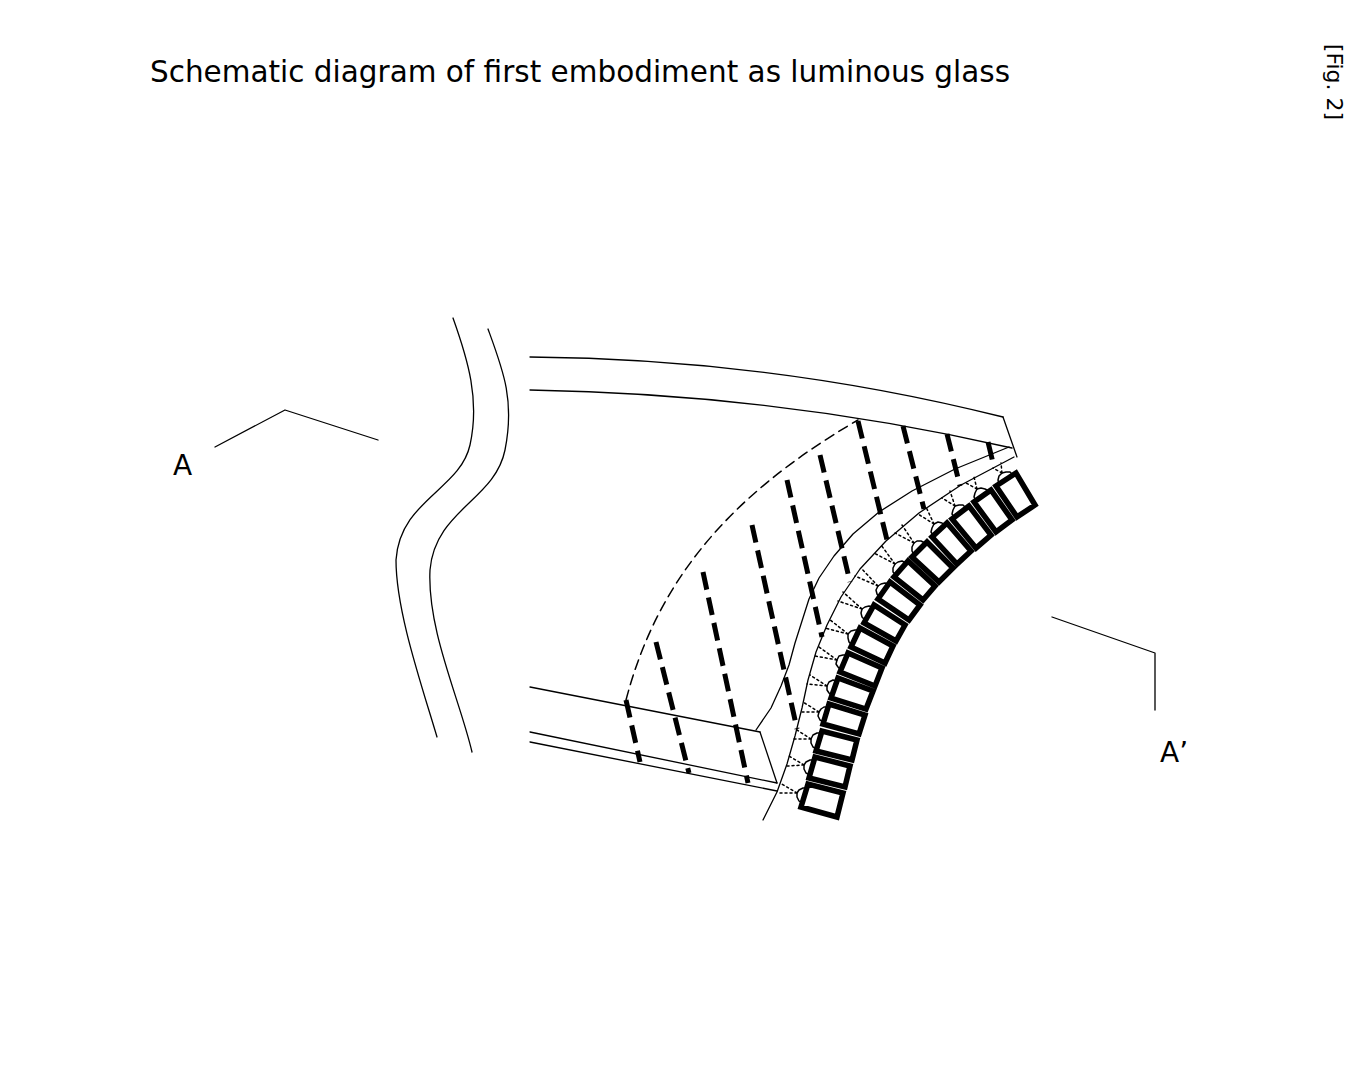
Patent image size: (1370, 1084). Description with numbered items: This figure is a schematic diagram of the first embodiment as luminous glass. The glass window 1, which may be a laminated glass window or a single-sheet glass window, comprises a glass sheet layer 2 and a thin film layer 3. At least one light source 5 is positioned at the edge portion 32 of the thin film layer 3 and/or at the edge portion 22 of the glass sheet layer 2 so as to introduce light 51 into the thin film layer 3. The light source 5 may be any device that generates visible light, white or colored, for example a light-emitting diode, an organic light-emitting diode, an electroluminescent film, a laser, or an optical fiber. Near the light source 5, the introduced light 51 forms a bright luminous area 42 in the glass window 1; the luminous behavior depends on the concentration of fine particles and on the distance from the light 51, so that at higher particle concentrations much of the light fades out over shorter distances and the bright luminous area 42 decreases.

The glass window 1 is at (723, 293).
The glass sheet layer 2 is at (588, 710).
The thin film layer 3 is at (588, 746).
The edge portion of glass sheet layer 22 is at (748, 773).
The edge portion of thin film layer 32 is at (772, 740).
The bright luminous area 42 is at (1020, 318).
The light source 5 is at (960, 625).
The light 51 is at (1020, 462).